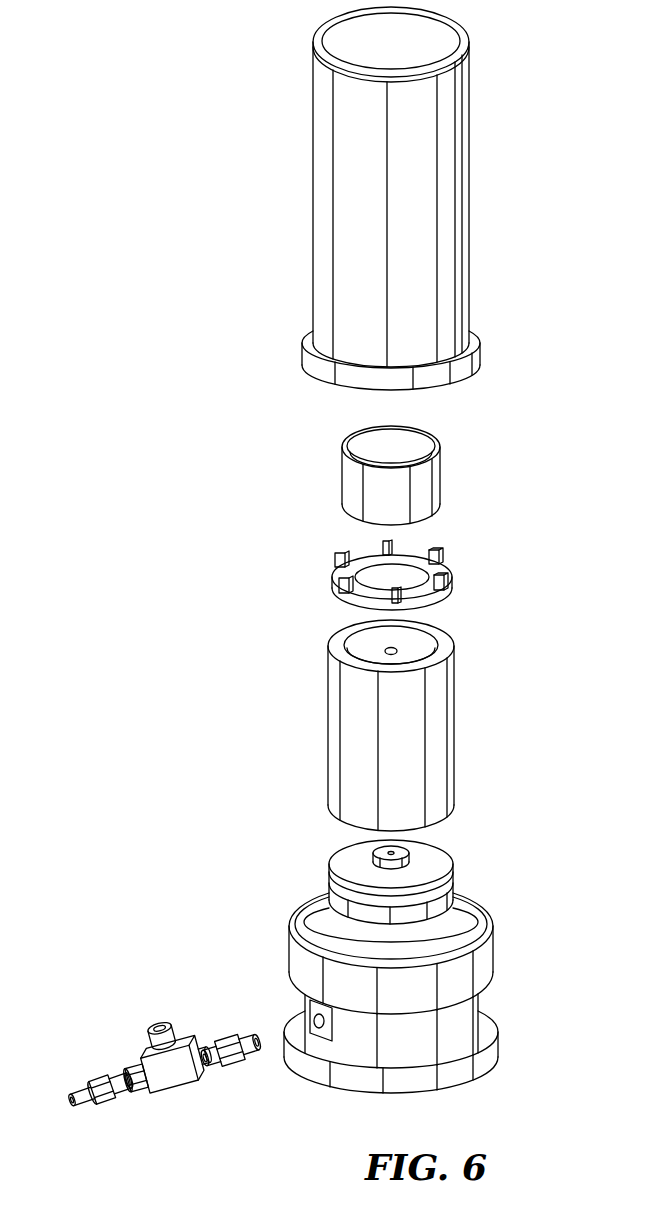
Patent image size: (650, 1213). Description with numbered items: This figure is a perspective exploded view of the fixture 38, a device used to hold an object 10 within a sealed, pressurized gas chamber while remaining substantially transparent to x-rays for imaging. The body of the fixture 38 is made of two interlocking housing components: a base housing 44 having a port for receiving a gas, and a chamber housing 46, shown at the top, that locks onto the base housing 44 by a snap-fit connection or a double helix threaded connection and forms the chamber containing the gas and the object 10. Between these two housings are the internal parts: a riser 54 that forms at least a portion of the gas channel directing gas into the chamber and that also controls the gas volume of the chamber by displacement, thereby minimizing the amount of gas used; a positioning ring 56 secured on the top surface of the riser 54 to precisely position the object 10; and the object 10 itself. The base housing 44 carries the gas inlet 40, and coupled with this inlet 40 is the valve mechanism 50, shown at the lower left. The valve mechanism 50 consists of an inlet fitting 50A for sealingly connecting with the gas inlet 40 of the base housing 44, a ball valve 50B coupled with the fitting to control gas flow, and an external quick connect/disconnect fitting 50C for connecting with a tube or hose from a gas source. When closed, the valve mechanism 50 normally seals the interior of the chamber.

The fixture 38 is at (226, 112).
The chamber housing 46 is at (325, 233).
The object 10 is at (351, 485).
The positioning ring 56 is at (338, 578).
The riser 54 is at (340, 688).
The base housing 44 is at (300, 958).
The inlet 40 is at (310, 1018).
The valve mechanism 50 is at (283, 1073).
The inlet fitting 50A is at (220, 1038).
The ball valve 50B is at (158, 1032).
The quick connect/disconnect fitting 50C is at (102, 1068).